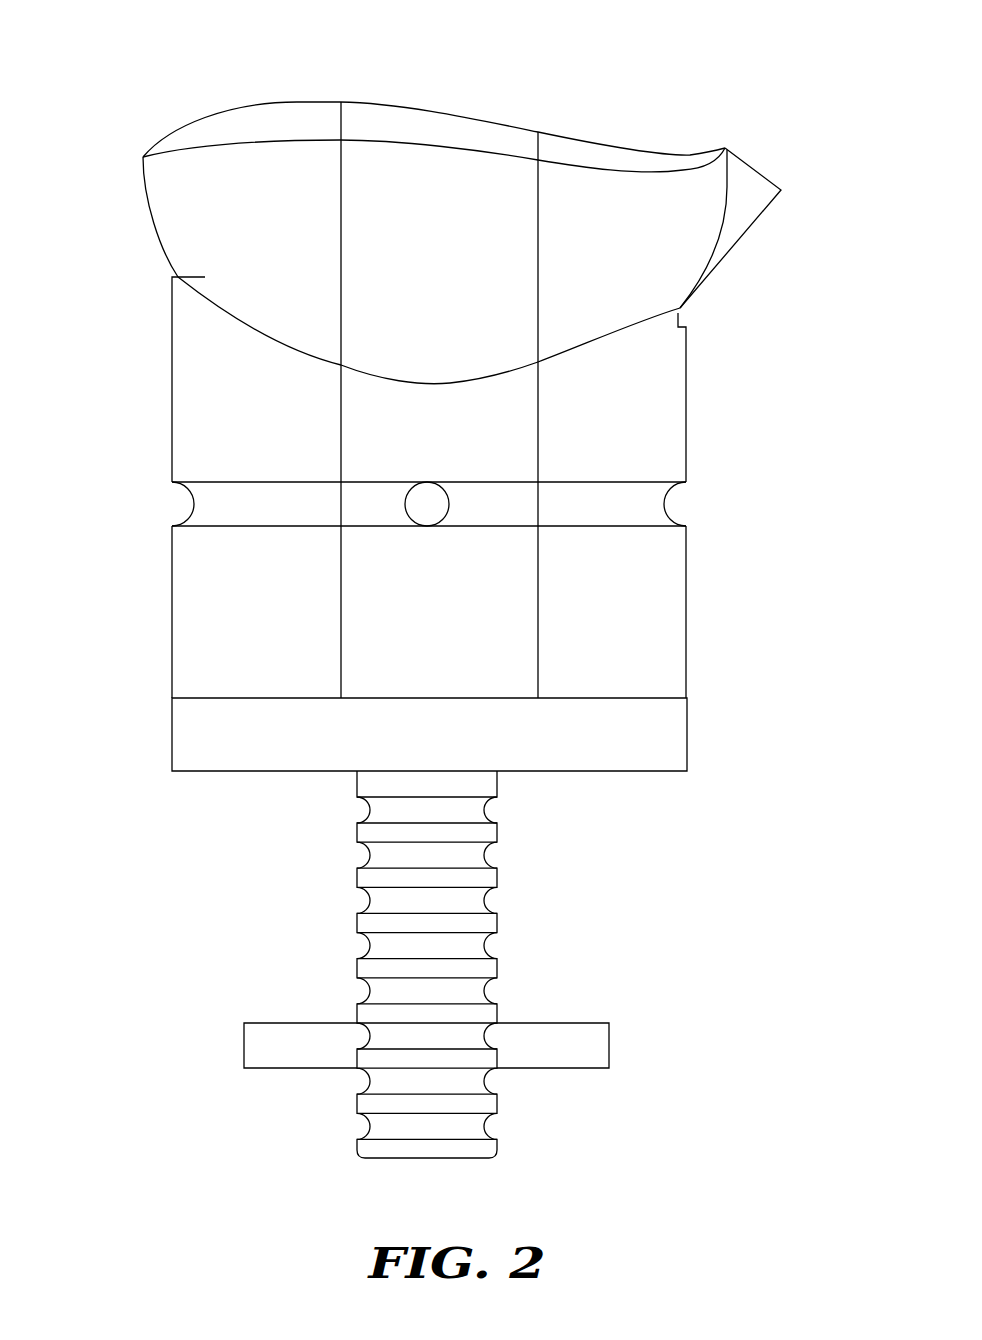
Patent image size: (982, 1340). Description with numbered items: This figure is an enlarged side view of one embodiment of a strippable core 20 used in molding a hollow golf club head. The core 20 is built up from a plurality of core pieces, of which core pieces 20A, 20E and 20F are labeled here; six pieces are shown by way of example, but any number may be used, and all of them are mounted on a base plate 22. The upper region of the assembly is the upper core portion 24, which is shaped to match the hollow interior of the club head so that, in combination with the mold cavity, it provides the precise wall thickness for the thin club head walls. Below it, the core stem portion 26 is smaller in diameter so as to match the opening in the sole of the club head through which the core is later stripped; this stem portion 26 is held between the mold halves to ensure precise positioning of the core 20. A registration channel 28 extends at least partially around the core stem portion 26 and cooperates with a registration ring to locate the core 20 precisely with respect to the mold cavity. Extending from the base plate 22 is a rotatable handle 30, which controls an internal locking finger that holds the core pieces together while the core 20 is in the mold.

The core 20 is at (713, 442).
The core piece 20A is at (430, 168).
The core piece 20E is at (236, 175).
The core piece 20F is at (622, 225).
The base plate 22 is at (658, 732).
The upper core portion 24 is at (110, 100).
The core stem portion 26 is at (110, 276).
The registration channel 28 is at (666, 503).
The rotatable handle 30 is at (485, 923).